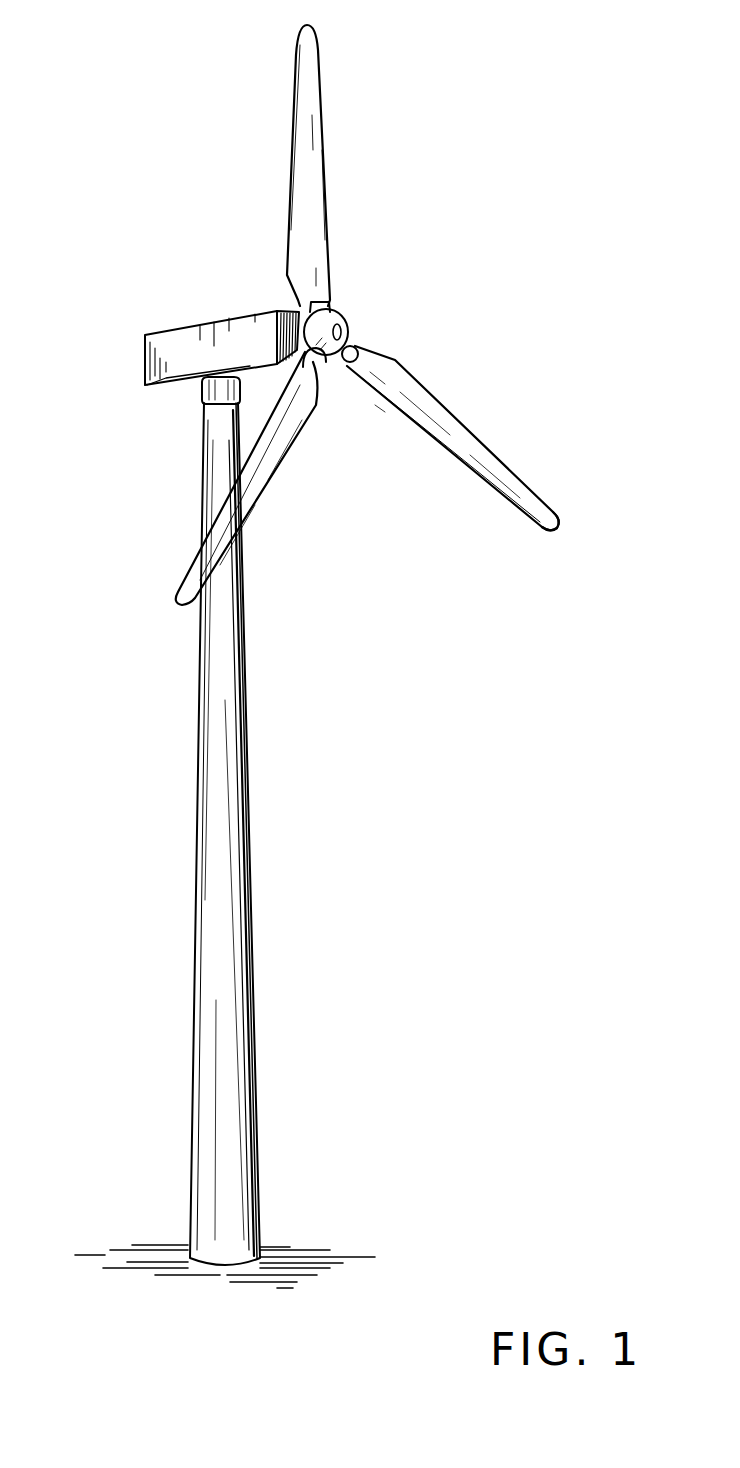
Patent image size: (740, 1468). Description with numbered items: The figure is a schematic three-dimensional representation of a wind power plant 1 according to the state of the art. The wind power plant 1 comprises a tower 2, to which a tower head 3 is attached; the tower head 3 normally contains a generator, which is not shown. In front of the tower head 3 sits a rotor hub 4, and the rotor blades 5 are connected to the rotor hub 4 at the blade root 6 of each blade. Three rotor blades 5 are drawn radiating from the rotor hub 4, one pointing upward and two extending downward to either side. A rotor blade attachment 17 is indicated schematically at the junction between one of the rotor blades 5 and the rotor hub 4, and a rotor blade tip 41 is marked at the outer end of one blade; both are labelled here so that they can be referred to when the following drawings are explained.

The wind power plant 1 is at (170, 764).
The tower 2 is at (236, 916).
The tower head 3 is at (199, 318).
The rotor hub 4 is at (335, 314).
The rotor blades 5 is at (295, 96).
The blade root 6 is at (342, 364).
The rotor blade attachment 17 is at (366, 333).
The rotor blade tip 41 is at (566, 520).